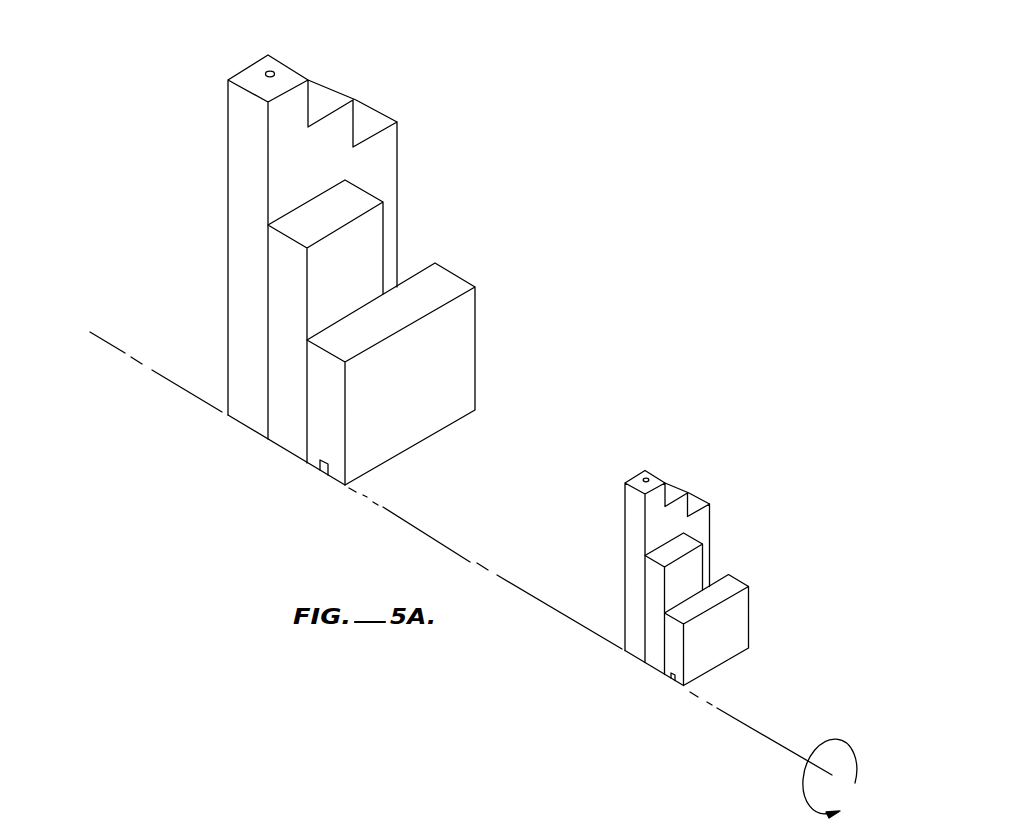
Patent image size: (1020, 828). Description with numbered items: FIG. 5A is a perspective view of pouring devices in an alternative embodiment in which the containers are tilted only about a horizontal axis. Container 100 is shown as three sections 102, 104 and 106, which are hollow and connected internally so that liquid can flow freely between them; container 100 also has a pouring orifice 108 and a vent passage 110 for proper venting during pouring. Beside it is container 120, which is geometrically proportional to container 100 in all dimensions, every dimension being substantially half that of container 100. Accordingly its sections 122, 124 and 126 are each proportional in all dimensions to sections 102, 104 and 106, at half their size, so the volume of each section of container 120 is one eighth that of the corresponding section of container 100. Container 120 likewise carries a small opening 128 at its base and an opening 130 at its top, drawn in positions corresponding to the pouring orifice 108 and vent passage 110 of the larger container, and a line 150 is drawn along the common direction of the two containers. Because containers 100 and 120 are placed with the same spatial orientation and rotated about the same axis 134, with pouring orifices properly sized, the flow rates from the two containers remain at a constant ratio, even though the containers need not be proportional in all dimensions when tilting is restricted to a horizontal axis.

The container 100 is at (190, 305).
The section 102 is at (232, 124).
The section 104 is at (282, 250).
The section 106 is at (466, 313).
The pouring orifice 108 is at (322, 468).
The vent passage 110 is at (274, 72).
The container 120 is at (583, 654).
The section 122 is at (625, 550).
The section 124 is at (693, 565).
The section 126 is at (738, 606).
The notch in base of second assembly 128 is at (669, 680).
The hole in top of second assembly 130 is at (648, 479).
The axis 134 is at (852, 738).
The reference axis line 150 is at (163, 827).